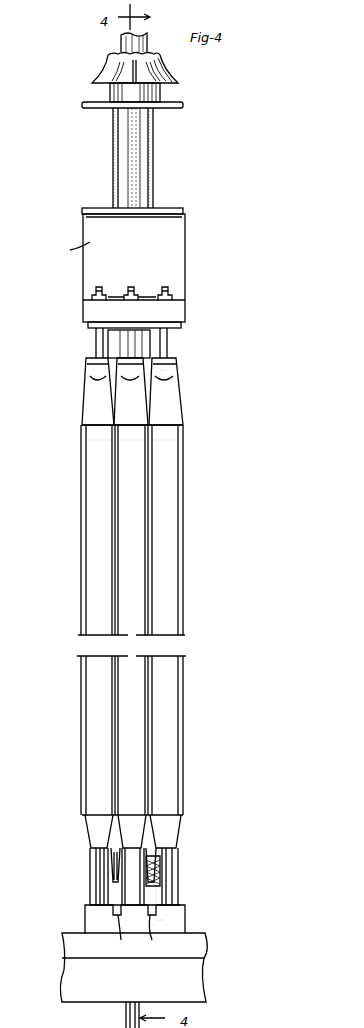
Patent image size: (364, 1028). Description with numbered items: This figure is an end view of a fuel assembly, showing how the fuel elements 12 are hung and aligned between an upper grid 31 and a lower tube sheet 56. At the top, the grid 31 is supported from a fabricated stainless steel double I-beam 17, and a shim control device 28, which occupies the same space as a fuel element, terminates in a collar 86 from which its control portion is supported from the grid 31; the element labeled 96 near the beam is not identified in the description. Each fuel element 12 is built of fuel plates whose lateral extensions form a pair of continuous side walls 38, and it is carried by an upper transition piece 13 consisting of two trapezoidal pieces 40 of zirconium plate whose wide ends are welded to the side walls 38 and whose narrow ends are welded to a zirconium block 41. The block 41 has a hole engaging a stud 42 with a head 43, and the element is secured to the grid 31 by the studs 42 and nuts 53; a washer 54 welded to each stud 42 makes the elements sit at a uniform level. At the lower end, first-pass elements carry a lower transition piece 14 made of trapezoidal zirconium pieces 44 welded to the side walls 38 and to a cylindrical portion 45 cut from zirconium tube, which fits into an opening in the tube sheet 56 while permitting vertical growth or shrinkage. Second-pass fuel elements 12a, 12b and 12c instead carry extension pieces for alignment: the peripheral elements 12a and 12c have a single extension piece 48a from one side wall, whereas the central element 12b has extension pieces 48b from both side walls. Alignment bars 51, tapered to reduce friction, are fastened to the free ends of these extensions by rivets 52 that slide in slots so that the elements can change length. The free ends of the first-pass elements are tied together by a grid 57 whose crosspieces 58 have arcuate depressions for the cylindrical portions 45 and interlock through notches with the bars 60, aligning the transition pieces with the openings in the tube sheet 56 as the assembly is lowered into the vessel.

The shim control device 28 is at (80, 83).
The conductor 96 is at (124, 136).
The double I-beam 17 is at (116, 160).
The nuts 53 is at (163, 288).
The grid 31 is at (96, 306).
The washer 54 is at (96, 333).
The collar 86 is at (115, 341).
The stud 42 is at (166, 346).
The zirconium block 41 is at (165, 362).
The head 43 is at (166, 377).
The trapezoidal pieces 40 is at (88, 386).
The upper transition piece 13 is at (79, 406).
The fuel element 12 is at (191, 508).
The side walls 38 is at (112, 514).
The fuel element 12a is at (97, 586).
The fuel element 12b is at (140, 575).
The fuel element 12c is at (172, 556).
The trapezoidal zirconium pieces 44 is at (88, 830).
The lower transition piece 14 is at (80, 848).
The extension piece 48a is at (150, 855).
The extension pieces 48b is at (150, 845).
The alignment bars 51 is at (104, 868).
The rivets 52 is at (162, 868).
The cylindrical portion 45 is at (162, 878).
The grid 57 is at (195, 921).
The crosspieces 58 is at (96, 915).
The bars 60 is at (135, 935).
The tube sheet 56 is at (196, 975).